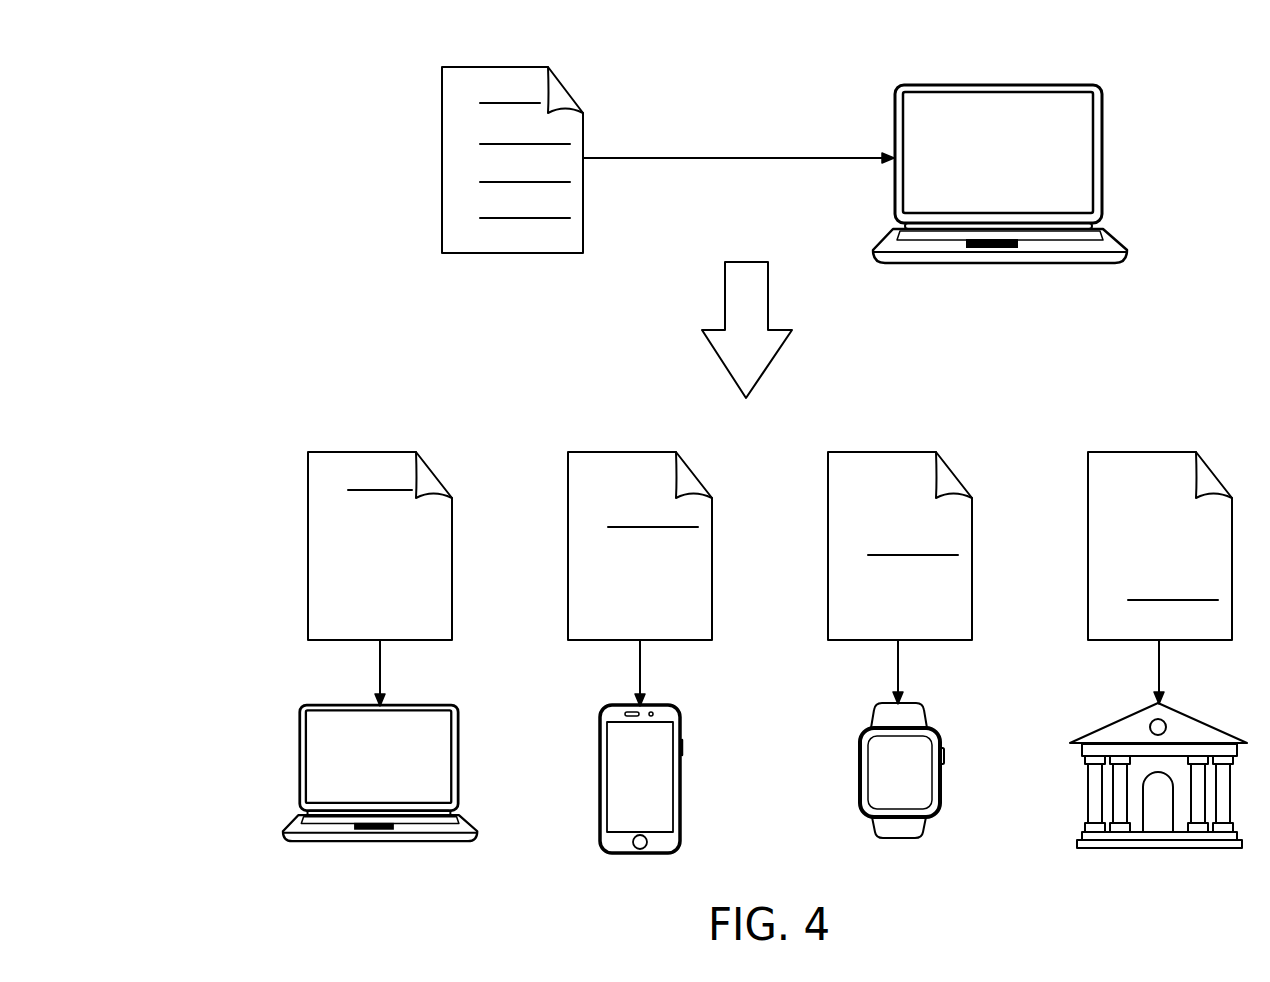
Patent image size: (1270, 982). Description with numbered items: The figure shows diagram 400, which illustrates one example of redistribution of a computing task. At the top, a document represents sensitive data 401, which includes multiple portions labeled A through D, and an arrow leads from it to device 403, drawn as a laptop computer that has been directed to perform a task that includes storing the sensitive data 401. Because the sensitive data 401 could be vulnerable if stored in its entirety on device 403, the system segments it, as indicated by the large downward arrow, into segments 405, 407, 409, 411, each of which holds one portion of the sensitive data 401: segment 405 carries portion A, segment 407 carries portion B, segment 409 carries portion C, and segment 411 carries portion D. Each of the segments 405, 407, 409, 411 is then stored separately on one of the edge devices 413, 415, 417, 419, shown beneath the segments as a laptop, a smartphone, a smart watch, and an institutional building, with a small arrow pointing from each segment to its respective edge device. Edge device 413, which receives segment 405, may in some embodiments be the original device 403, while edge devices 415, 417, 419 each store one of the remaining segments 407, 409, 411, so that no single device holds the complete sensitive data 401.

The diagram 400 is at (176, 60).
The sensitive data 401 is at (498, 66).
The device 403 is at (998, 84).
The segment 405 is at (375, 452).
The segment 407 is at (628, 452).
The segment 409 is at (888, 452).
The segment 411 is at (1152, 452).
The edge device 413 is at (378, 843).
The edge device 415 is at (633, 853).
The edge device 417 is at (898, 838).
The edge device 419 is at (1163, 848).